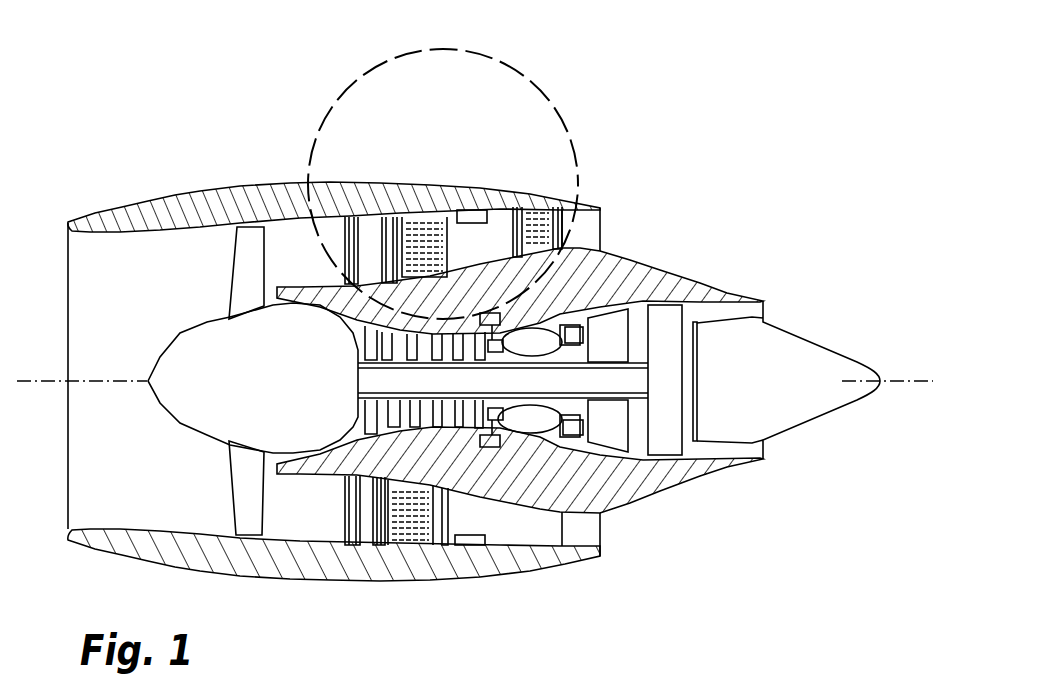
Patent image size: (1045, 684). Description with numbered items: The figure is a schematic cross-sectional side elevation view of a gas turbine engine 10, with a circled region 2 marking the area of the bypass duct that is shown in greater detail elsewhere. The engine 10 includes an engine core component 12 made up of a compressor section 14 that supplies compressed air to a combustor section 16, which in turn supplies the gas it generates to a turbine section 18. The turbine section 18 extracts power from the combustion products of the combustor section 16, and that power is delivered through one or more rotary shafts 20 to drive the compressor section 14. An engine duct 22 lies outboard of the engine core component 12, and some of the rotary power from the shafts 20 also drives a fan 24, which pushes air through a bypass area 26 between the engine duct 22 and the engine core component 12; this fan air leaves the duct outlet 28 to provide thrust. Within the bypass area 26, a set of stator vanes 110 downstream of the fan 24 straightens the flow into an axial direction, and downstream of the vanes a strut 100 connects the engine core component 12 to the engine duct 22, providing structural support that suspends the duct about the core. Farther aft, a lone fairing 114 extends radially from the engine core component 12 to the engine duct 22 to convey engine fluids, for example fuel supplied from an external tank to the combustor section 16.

The gas turbine engine 10 is at (475, 310).
The detail region of FIG. 2 is at (537, 92).
The engine duct 22 is at (178, 207).
The fan 24 is at (238, 285).
The bypass area 26 is at (293, 257).
The stator vanes 110 is at (352, 217).
The strut 100 is at (410, 215).
The fairing 114 is at (540, 215).
The duct outlet 28 is at (602, 543).
The engine core component 12 is at (726, 302).
The compressor section 14 is at (433, 433).
The combustor section 16 is at (555, 318).
The turbine section 18 is at (608, 335).
The rotary shafts 20 is at (602, 402).